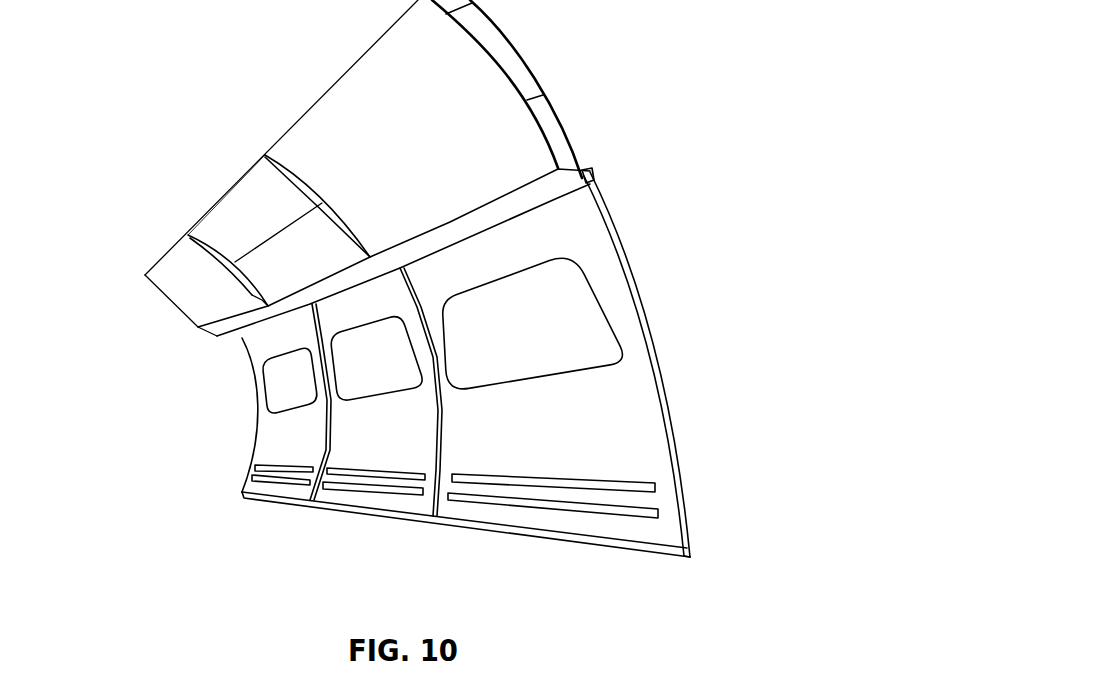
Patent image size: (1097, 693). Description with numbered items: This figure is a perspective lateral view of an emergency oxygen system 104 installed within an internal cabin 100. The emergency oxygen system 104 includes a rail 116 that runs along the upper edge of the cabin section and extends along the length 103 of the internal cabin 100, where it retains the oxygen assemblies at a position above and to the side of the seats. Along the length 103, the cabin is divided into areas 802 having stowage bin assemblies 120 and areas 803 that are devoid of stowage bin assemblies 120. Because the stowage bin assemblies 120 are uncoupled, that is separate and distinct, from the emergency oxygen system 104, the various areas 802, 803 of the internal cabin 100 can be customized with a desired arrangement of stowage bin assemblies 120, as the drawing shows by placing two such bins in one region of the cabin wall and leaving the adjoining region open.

The internal cabin 100 is at (471, 383).
The length 103 is at (687, 570).
The emergency oxygen system 104 is at (236, 338).
The rail 116 is at (565, 182).
The stowage bin assemblies 120 is at (264, 192).
The areas having stowage bin assemblies 802 is at (190, 202).
The areas devoid of stowage bin assemblies 803 is at (350, 103).